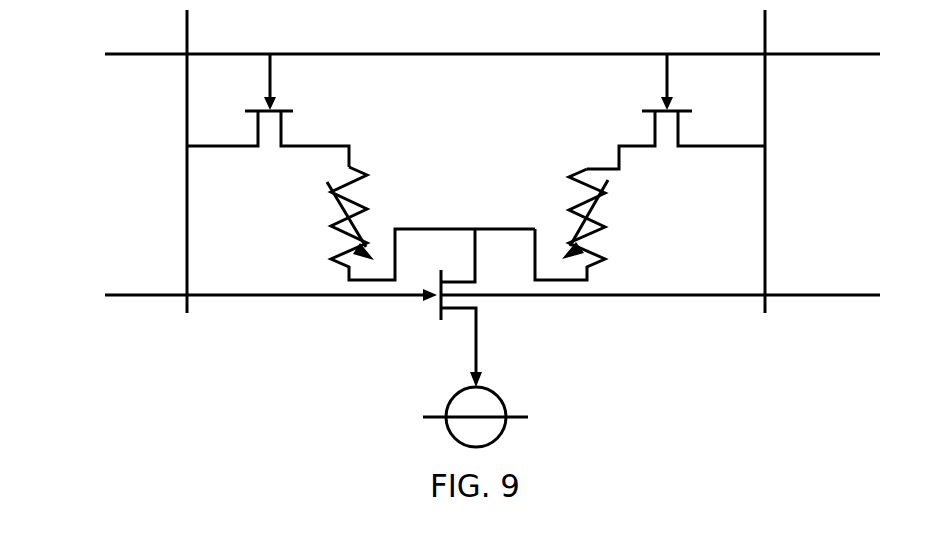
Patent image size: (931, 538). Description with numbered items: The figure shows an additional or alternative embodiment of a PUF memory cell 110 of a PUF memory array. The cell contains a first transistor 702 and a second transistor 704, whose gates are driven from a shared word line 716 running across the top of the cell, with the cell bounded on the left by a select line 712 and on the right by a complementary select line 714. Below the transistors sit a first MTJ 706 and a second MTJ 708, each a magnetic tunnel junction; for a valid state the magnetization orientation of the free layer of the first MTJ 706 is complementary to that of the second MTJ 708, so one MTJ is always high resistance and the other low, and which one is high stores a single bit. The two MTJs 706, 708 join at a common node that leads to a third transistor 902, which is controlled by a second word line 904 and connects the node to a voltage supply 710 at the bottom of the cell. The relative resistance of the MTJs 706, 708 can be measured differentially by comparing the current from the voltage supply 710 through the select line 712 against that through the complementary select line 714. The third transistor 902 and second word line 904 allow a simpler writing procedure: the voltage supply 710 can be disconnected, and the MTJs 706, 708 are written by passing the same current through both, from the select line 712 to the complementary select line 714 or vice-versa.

The PUF memory cell 110 is at (68, 54).
The select line 712 is at (186, 36).
The complementary select line 714 is at (766, 36).
The word line 716 is at (243, 53).
The first transistor 702 is at (288, 110).
The second transistor 704 is at (647, 110).
The first MTJ 706 is at (328, 223).
The second MTJ 708 is at (605, 222).
The third transistor 902 is at (440, 278).
The second word line 904 is at (243, 294).
The voltage supply 710 is at (462, 388).